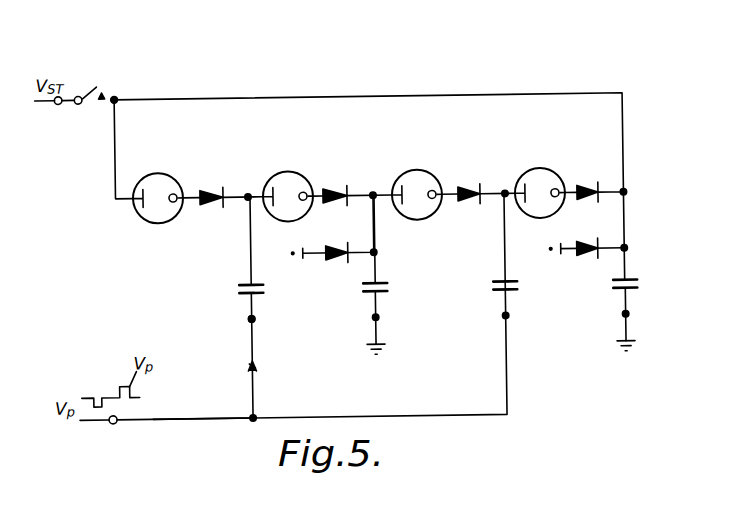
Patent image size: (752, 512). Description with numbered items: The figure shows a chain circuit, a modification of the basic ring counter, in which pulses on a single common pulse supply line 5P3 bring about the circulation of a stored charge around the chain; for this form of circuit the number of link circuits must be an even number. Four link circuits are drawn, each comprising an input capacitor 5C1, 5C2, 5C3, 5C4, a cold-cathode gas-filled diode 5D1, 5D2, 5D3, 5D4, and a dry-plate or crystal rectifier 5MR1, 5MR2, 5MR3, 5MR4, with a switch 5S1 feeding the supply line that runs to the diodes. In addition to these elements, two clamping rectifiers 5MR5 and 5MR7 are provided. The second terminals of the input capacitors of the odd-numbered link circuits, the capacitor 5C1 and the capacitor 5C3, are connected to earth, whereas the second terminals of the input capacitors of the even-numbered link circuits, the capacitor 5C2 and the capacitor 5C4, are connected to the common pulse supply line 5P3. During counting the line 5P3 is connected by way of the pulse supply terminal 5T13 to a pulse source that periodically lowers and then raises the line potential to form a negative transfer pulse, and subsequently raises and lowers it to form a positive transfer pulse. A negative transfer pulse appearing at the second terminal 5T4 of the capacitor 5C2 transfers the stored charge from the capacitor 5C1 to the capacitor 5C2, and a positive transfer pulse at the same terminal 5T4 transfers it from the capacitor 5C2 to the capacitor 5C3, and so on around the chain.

The switch 5S1 is at (88, 82).
The cold-cathode gas-filled diode 5D1 is at (157, 185).
The cold-cathode gas-filled diode 5D2 is at (287, 184).
The cold-cathode gas-filled diode 5D3 is at (416, 182).
The cold-cathode gas-filled diode 5D4 is at (539, 181).
The dry-plate or crystal rectifier 5MR1 is at (220, 184).
The dry-plate or crystal rectifier 5MR2 is at (346, 182).
The dry-plate or crystal rectifier 5MR3 is at (473, 180).
The dry-plate or crystal rectifier 5MR4 is at (594, 178).
The clamping rectifier 5MR5 is at (586, 234).
The clamping rectifier 5MR7 is at (332, 229).
The input capacitor 5C1 is at (606, 285).
The input capacitor 5C2 is at (274, 289).
The input capacitor 5C3 is at (399, 288).
The input capacitor 5C4 is at (529, 287).
The second terminal 5T4 is at (252, 321).
The pulse supply terminal 5T13 is at (113, 421).
The common pulse supply line 5P3 is at (204, 407).